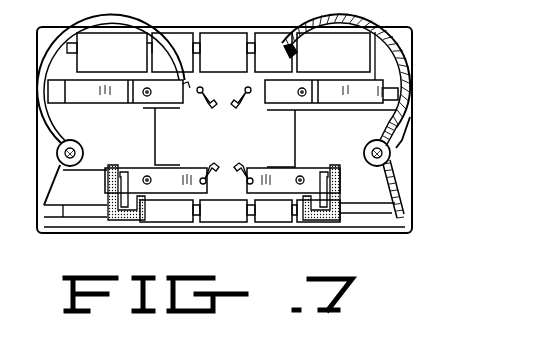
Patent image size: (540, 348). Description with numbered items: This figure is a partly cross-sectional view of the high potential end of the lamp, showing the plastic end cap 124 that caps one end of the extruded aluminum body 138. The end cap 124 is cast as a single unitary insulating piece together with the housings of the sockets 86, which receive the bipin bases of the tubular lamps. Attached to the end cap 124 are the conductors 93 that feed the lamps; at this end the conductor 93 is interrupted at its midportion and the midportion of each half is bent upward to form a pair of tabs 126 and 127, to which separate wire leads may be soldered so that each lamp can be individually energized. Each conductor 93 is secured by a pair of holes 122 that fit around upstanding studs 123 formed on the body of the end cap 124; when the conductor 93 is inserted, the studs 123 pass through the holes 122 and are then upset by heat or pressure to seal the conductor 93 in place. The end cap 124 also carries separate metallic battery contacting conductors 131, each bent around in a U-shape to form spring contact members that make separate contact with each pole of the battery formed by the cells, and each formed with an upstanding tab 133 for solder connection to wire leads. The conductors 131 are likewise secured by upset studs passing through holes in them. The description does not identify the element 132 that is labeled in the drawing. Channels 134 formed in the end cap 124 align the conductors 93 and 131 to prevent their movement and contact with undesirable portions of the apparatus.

The socket 86 is at (112, 228).
The conductor 93 is at (176, 195).
The holes 122 is at (155, 195).
The upstanding studs 123 is at (145, 177).
The end cap 124 is at (409, 144).
The tab 126 is at (202, 167).
The tab 127 is at (255, 167).
The battery contacting conductors 131 is at (185, 80).
The upper support bar 132 is at (113, 87).
The upstanding tabs 133 is at (247, 87).
The channels 134 is at (173, 167).
The body 138 is at (393, 193).